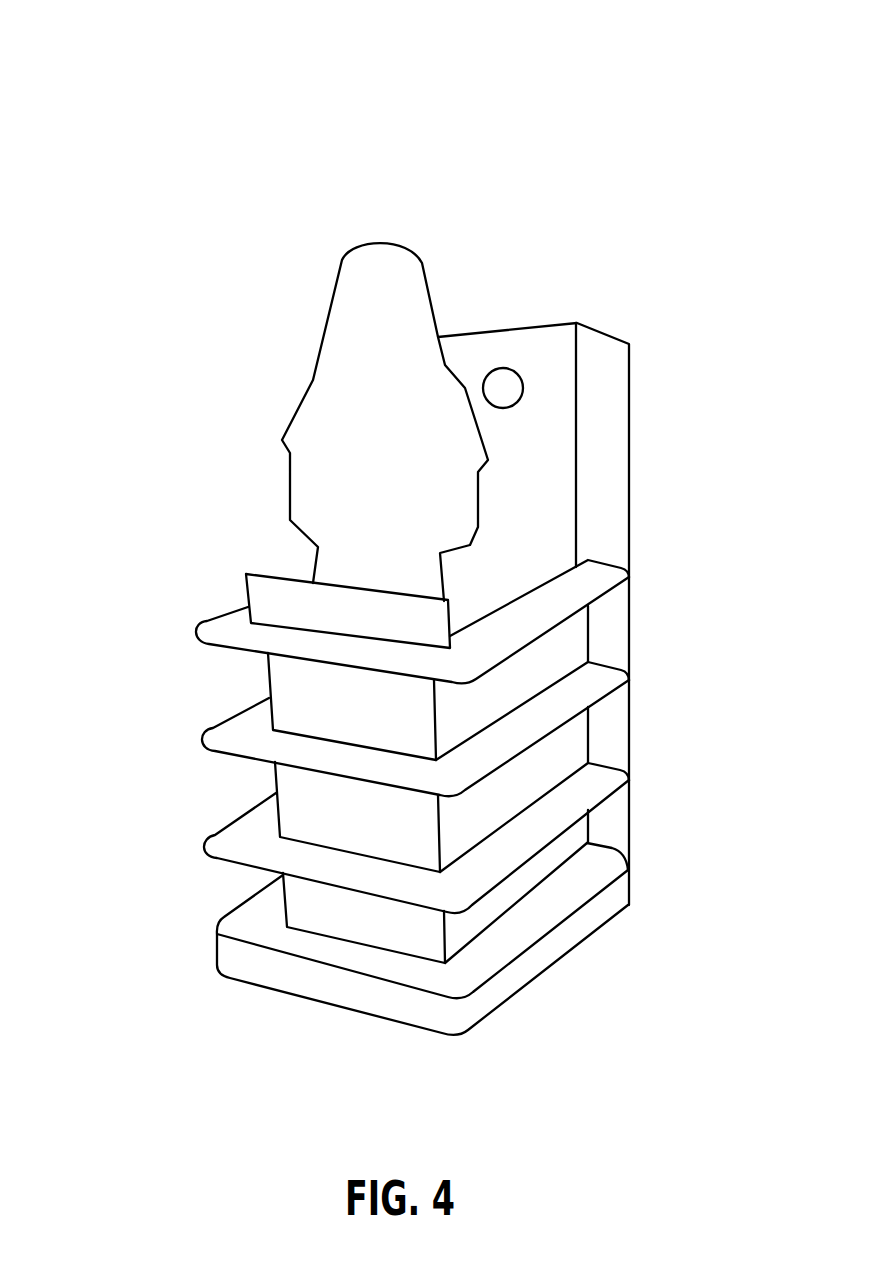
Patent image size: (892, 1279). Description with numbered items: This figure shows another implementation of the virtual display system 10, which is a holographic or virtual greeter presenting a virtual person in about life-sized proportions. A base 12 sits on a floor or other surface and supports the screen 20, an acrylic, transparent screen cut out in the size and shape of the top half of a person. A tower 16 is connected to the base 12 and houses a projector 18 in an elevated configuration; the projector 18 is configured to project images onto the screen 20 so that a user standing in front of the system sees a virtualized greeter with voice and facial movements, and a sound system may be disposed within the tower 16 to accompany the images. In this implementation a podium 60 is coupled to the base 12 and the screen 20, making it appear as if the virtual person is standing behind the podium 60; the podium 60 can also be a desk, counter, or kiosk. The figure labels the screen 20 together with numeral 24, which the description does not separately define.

The virtual display system 10 is at (483, 77).
The base 12 is at (213, 945).
The tower 16 is at (629, 525).
The projector 18 is at (505, 368).
The screen 20 is at (348, 422).
The blade body 24 is at (283, 438).
The podium 60 is at (273, 780).